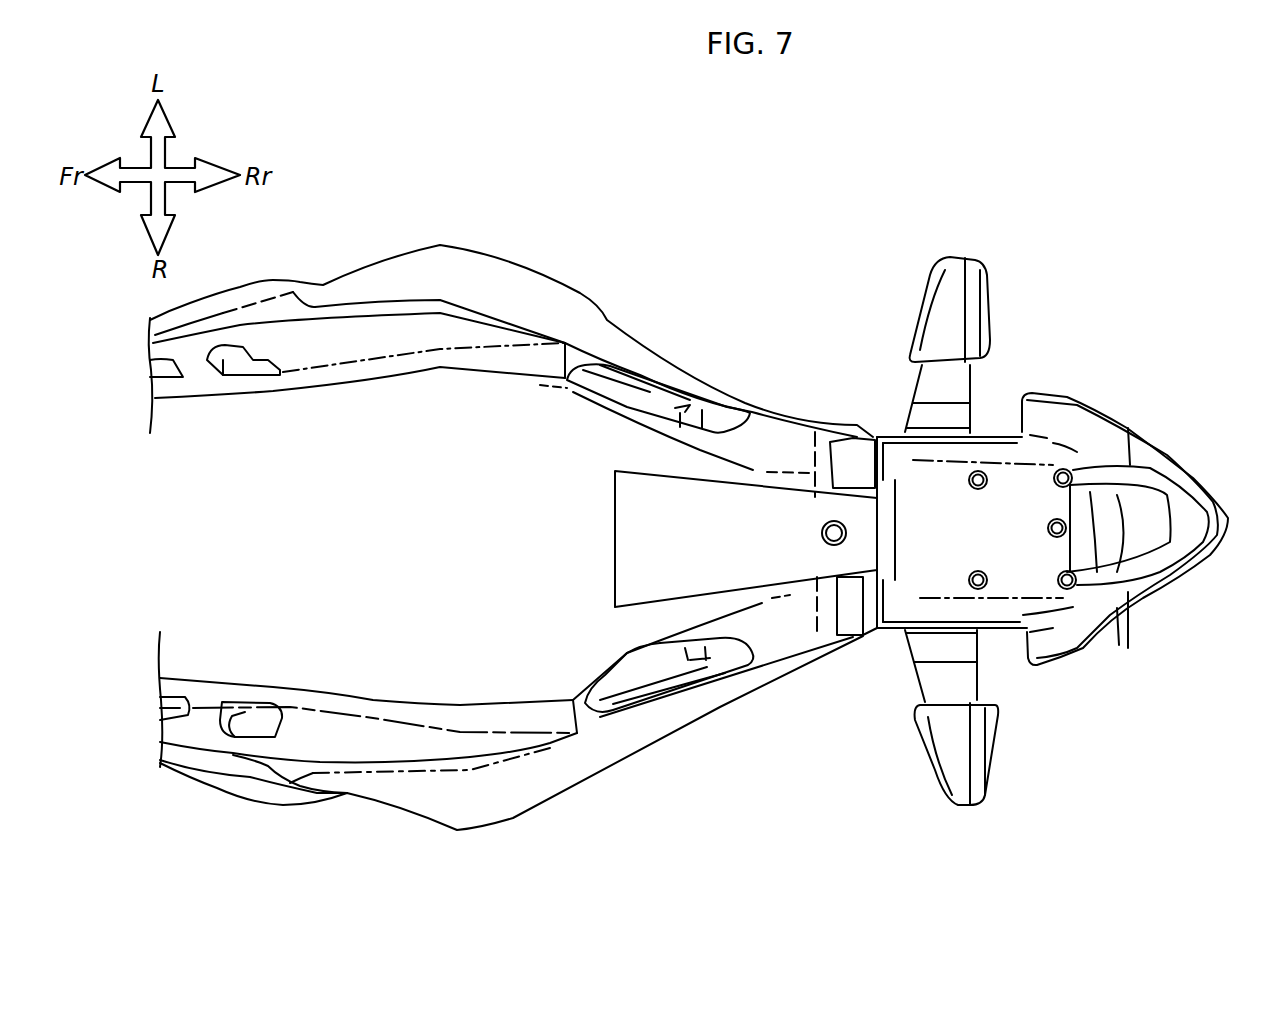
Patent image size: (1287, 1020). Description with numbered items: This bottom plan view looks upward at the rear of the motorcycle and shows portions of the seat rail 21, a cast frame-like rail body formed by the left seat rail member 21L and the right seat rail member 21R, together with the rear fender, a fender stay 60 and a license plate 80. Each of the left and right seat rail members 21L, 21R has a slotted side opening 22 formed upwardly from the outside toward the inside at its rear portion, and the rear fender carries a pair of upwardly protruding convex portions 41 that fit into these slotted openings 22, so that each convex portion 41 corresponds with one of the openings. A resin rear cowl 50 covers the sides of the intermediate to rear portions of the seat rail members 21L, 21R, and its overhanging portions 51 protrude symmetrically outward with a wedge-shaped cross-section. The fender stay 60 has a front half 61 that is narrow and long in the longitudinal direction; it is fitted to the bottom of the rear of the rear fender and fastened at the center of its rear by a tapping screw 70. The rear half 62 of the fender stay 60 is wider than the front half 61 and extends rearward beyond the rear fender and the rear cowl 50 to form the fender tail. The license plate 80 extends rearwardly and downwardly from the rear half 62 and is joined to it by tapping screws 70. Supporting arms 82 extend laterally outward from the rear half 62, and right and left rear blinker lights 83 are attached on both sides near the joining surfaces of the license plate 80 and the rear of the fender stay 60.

The seat rail 21 is at (377, 345).
The left seat rail member 21L is at (415, 330).
The right seat rail member 21R is at (373, 713).
The slotted side opening 22 is at (660, 409).
The convex portion 41 is at (636, 396).
The rear cowl 50 is at (562, 282).
The overhanging portion 51 is at (637, 330).
The fender stay 60 is at (807, 560).
The front half 61 is at (748, 505).
The rear half 62 is at (1020, 490).
The tapping screw 70 is at (1075, 478).
The license plate 80 is at (1192, 460).
The supporting arm 82 is at (958, 392).
The rear blinker light 83 is at (958, 287).